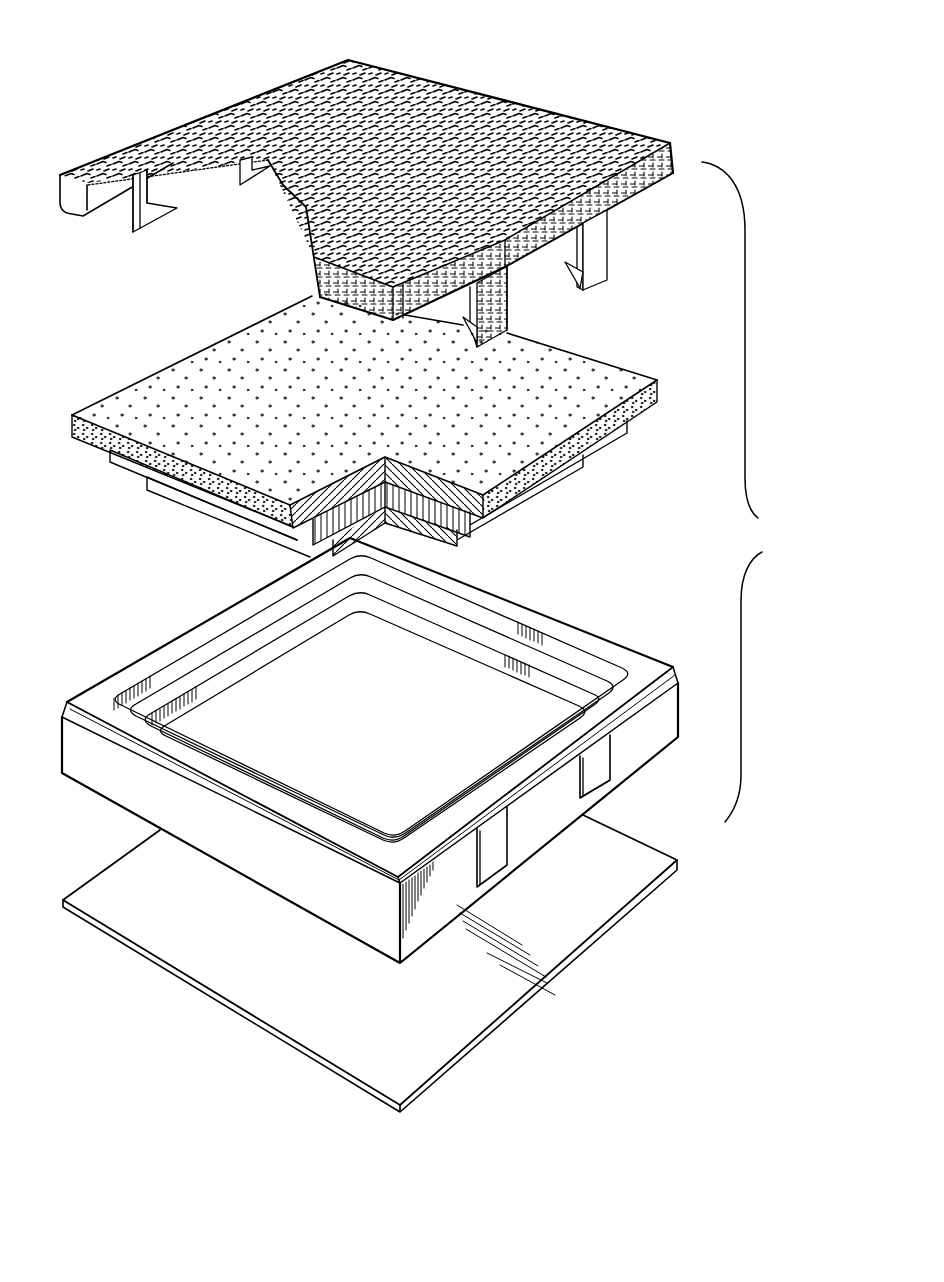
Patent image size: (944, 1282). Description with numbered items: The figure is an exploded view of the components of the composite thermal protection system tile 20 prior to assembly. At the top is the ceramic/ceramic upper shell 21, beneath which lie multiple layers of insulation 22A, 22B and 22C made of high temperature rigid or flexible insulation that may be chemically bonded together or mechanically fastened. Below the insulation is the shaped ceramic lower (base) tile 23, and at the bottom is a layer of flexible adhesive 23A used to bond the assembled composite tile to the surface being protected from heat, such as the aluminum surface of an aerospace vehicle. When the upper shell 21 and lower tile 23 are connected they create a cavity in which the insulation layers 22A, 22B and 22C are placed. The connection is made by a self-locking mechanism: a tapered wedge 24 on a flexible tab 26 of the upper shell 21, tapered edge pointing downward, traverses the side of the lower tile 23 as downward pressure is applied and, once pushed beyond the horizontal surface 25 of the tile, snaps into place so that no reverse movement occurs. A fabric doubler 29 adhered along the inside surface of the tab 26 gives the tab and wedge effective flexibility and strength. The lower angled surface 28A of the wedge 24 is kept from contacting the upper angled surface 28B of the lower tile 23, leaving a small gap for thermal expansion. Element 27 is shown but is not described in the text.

The composite thermal protection system tile 20 is at (676, 95).
The ceramic/ceramic upper shell 21 is at (672, 142).
The layer of insulation 22A is at (660, 387).
The layer of insulation 22B is at (613, 427).
The layer of insulation 22C is at (567, 458).
The ceramic lower (base) tile 23 is at (597, 632).
The layer of flexible adhesive 23A is at (678, 867).
The tapered wedge 24 is at (612, 262).
The horizontal surface 25 is at (586, 786).
The tab 26 is at (608, 234).
The barb on leg 27 is at (575, 280).
The lower angled surface of upper shell wedge 28A is at (153, 220).
The upper angled surface of lower tile 28B is at (593, 797).
The fabric doubler 29 is at (158, 190).